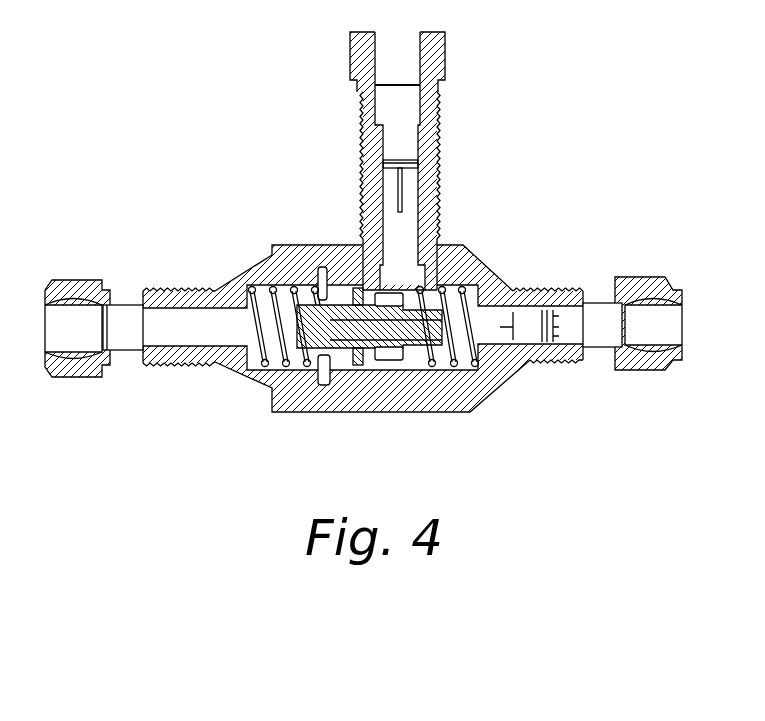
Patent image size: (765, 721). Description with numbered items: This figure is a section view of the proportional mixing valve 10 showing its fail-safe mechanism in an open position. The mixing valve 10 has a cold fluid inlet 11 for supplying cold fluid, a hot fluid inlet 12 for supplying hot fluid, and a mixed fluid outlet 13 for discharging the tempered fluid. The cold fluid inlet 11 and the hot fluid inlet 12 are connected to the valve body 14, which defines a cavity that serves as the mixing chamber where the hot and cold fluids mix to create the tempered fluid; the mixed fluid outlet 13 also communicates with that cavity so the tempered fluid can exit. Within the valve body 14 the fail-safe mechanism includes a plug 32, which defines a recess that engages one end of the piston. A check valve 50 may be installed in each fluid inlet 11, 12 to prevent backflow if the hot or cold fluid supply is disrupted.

The mixing valve 10 is at (324, 212).
The cold fluid inlet 11 is at (432, 222).
The hot fluid inlet 12 is at (518, 284).
The mixed fluid outlet 13 is at (203, 290).
The valve body 14 is at (418, 392).
The plug 32 is at (482, 283).
The check valve 50 is at (406, 178).